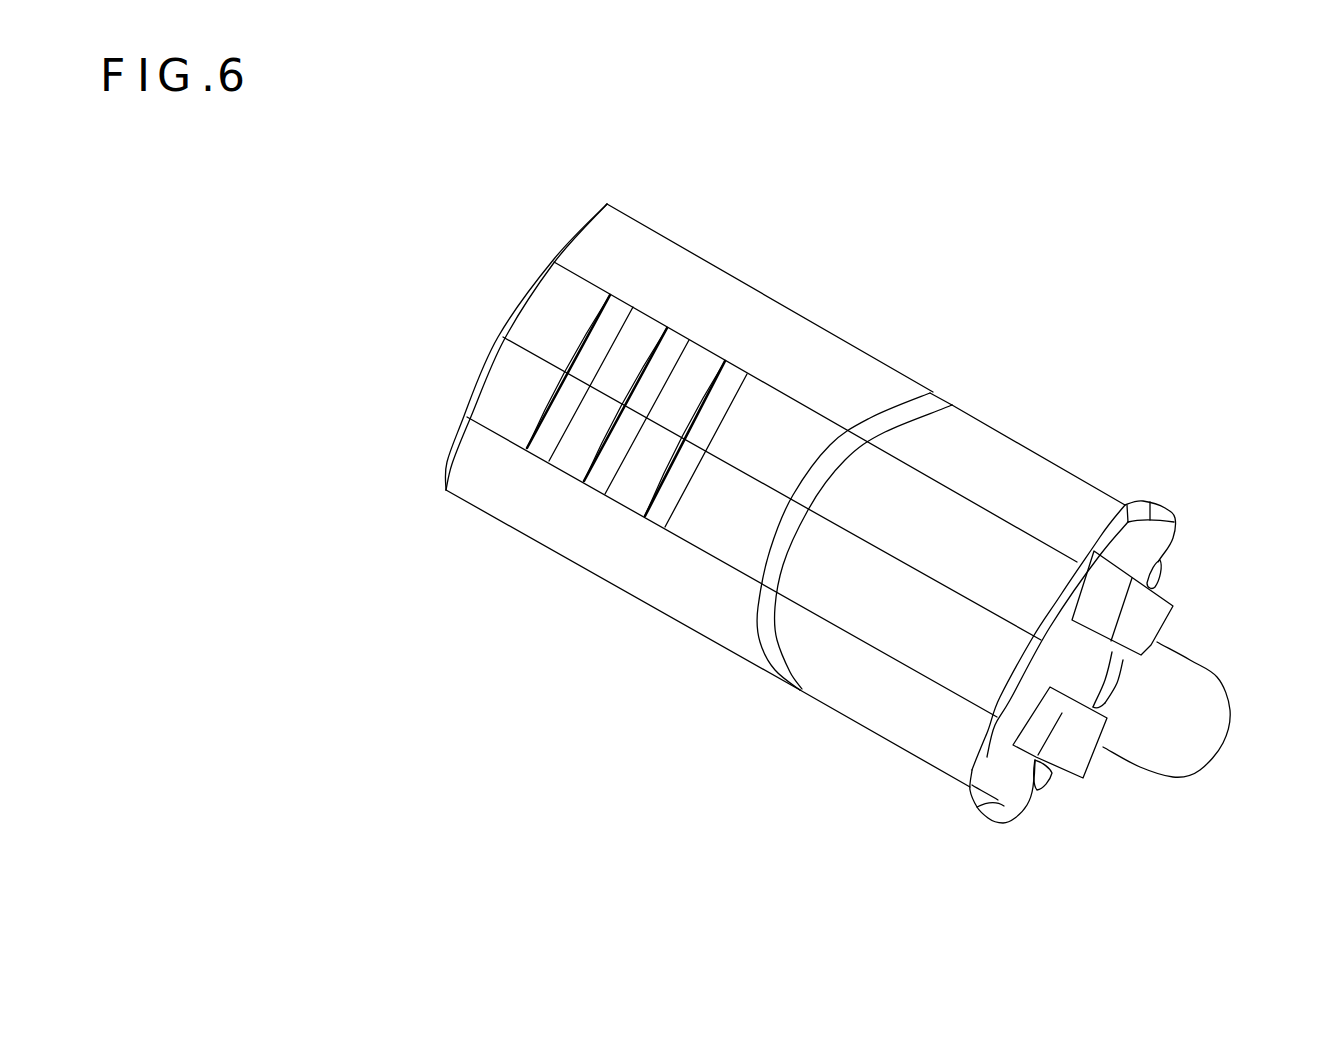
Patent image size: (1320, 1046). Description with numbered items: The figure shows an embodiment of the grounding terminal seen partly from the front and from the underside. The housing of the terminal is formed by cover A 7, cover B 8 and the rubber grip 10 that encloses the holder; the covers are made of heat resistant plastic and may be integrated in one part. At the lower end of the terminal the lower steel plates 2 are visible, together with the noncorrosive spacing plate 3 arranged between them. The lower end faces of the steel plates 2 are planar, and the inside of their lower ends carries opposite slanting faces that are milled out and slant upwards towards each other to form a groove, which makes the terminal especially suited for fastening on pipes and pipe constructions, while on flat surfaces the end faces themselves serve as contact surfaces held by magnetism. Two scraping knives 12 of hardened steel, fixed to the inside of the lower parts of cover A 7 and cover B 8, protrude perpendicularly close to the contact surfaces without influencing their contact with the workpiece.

The rubber grip 10 is at (467, 417).
The cover B 8 is at (1020, 443).
The cover A 7 is at (863, 713).
The scraping knives 12 is at (1180, 514).
The lower metal plates 2 is at (1178, 607).
The spacing plate 3 is at (1070, 670).